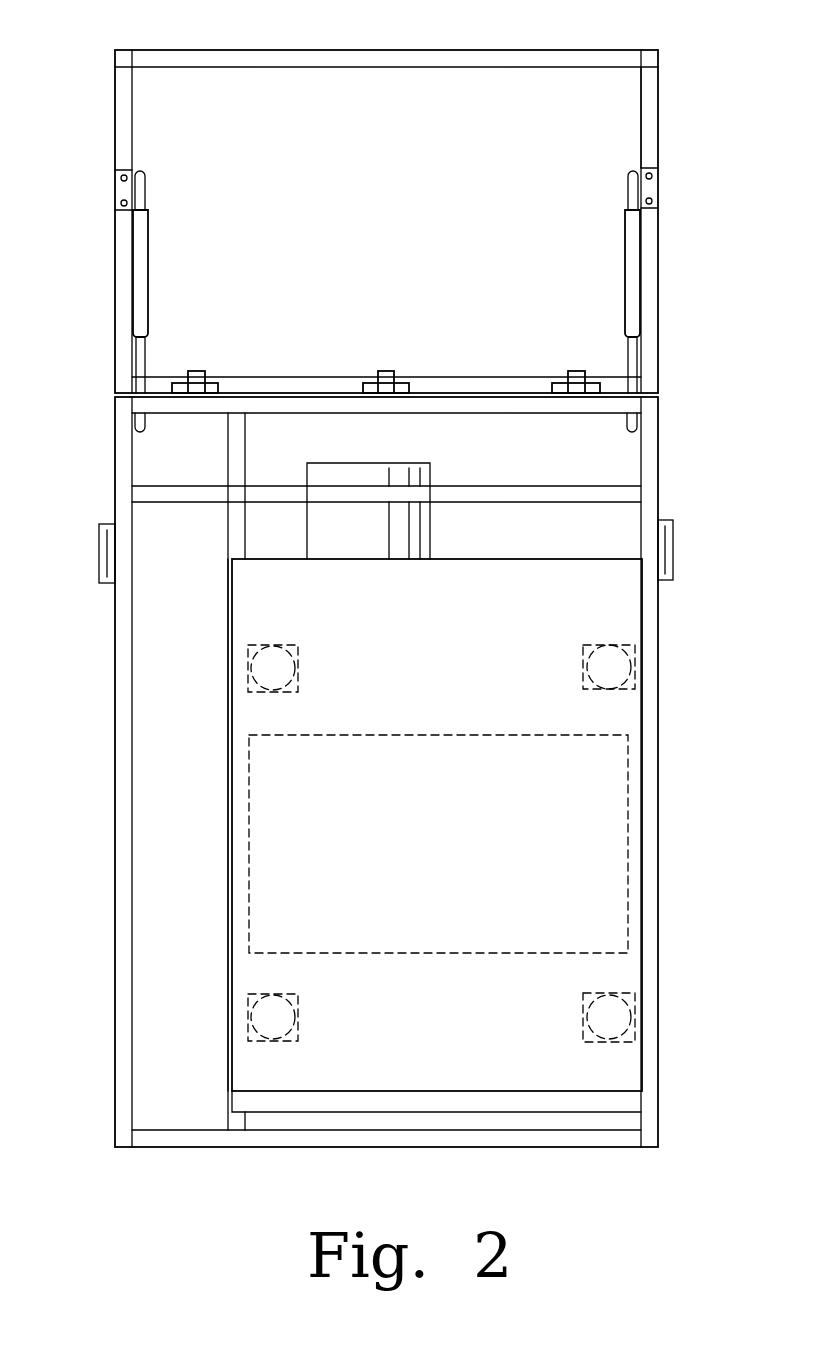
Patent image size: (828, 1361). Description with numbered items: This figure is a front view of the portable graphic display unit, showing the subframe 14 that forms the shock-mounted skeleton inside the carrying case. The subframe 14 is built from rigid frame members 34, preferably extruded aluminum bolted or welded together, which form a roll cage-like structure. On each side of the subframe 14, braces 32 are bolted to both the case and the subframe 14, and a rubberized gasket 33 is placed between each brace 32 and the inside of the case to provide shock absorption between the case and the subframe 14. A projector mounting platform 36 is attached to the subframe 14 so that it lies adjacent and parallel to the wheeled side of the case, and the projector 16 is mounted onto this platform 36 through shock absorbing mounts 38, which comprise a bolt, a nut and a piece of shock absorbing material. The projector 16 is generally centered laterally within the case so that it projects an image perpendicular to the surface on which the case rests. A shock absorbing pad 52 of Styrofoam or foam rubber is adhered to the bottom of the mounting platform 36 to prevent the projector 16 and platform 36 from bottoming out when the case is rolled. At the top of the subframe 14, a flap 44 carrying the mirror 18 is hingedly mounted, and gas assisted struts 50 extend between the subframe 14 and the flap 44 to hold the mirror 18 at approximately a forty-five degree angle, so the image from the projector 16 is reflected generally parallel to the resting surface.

The subframe 14 is at (652, 448).
The projector 16 is at (537, 597).
The mirror 18 is at (568, 92).
The braces 32 is at (112, 523).
The rubberized gasket 33 is at (101, 562).
The frame members 34 is at (238, 458).
The projector mounting platform 36 is at (228, 848).
The shock absorbing mounts 38 is at (300, 650).
The flap 44 is at (652, 97).
The gas assisted struts 50 is at (145, 246).
The shock absorbing pad 52 is at (455, 954).